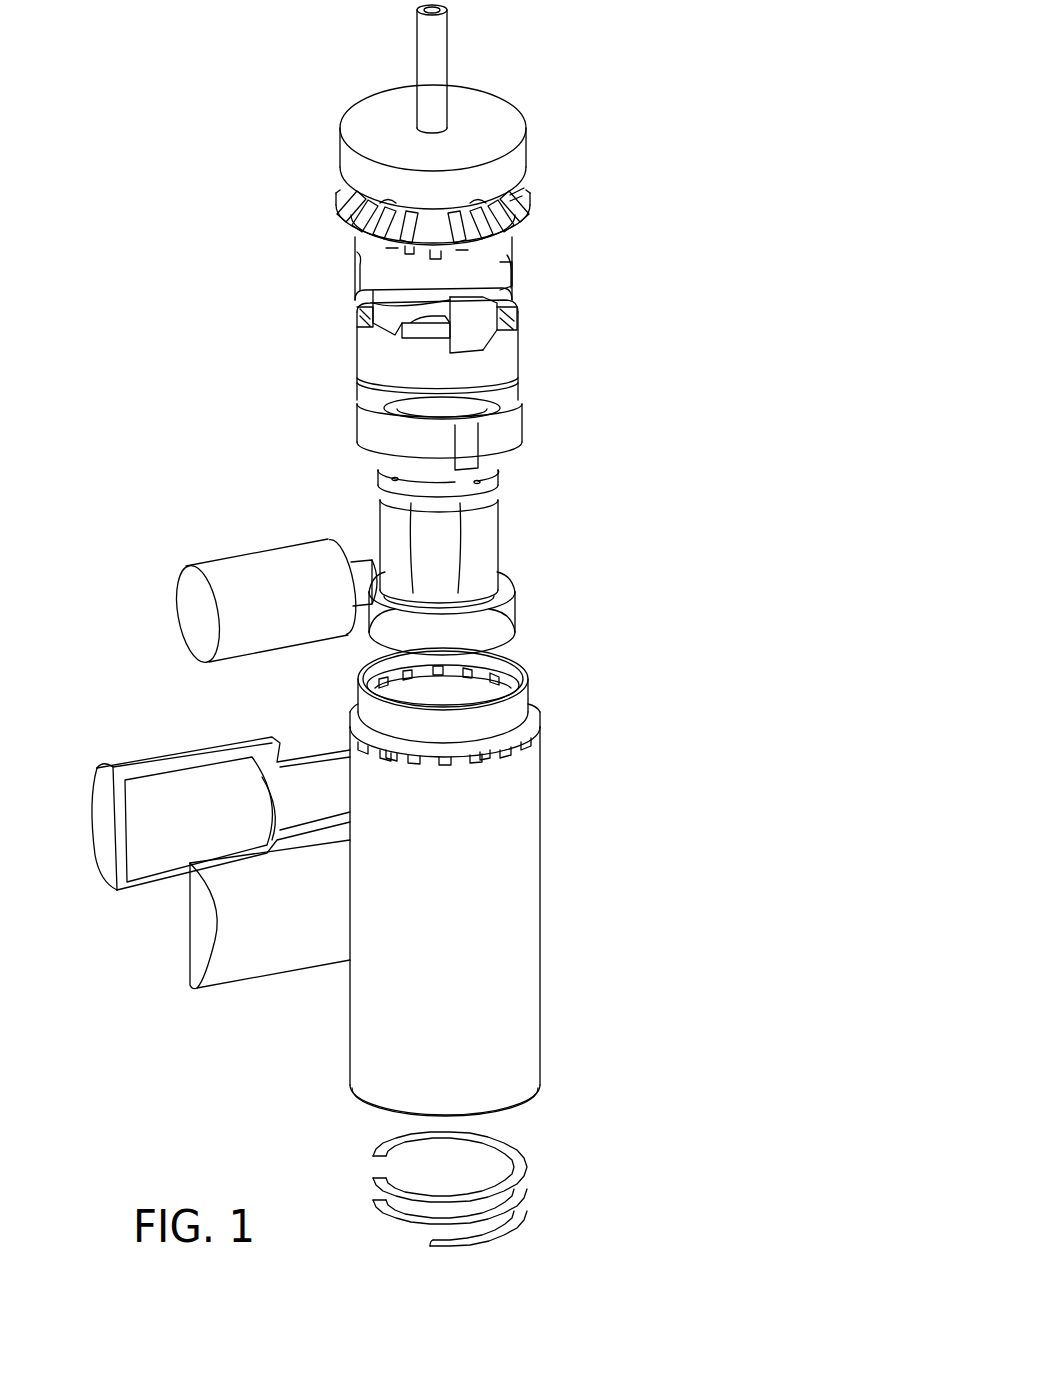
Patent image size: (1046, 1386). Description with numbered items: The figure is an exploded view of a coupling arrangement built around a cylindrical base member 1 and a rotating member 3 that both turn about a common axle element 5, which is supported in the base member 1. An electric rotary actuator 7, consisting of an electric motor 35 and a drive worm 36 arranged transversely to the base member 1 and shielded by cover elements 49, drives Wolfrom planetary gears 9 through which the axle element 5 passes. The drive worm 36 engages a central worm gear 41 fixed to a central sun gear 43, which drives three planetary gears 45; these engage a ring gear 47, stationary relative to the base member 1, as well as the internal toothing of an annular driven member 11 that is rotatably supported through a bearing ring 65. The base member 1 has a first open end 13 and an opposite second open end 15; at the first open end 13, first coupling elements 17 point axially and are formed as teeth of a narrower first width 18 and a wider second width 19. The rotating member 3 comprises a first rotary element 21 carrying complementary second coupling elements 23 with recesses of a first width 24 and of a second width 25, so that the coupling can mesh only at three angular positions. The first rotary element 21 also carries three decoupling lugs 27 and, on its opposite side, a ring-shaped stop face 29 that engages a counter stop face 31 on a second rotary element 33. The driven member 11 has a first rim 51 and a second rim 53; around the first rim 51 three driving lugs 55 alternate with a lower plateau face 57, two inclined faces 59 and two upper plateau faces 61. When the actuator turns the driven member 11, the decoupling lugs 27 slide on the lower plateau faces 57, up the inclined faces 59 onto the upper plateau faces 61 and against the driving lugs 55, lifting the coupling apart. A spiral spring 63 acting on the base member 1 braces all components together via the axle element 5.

The cylindrical base member 1 is at (532, 897).
The rotating member 3 is at (502, 193).
The axle element 5 is at (453, 62).
The electric rotary actuator 7 is at (273, 559).
The Wolfrom planetary gears 9 is at (498, 539).
The driven member 11 is at (351, 348).
The first open end 13 is at (535, 691).
The second open end 15 is at (530, 1106).
The first coupling elements 17 is at (470, 760).
The first width 18 is at (420, 758).
The second width 19 is at (482, 752).
The first rotary element 21 is at (550, 276).
The second coupling elements 23 is at (512, 238).
The first width recesses 24 is at (419, 258).
The second width recesses 25 is at (462, 258).
The decoupling lugs 27 is at (372, 300).
The stop face 29 is at (532, 196).
The counter stop face 31 is at (530, 184).
The second rotary element 33 is at (433, 147).
The electric motor 35 is at (266, 601).
The drive worm 36 is at (360, 562).
The central worm gear 41 is at (515, 622).
The central sun gear 43 is at (439, 525).
The planetary gears 45 is at (439, 546).
The ring gear 47 is at (439, 433).
The cover elements 49 is at (150, 762).
The first rim 51 is at (345, 307).
The second rim 53 is at (353, 384).
The driving lugs 55 is at (426, 348).
The lower plateau face 57 is at (515, 345).
The inclined faces 59 is at (355, 333).
The upper plateau faces 61 is at (452, 350).
The spiral spring 63 is at (372, 1182).
The bearing ring 65 is at (356, 678).